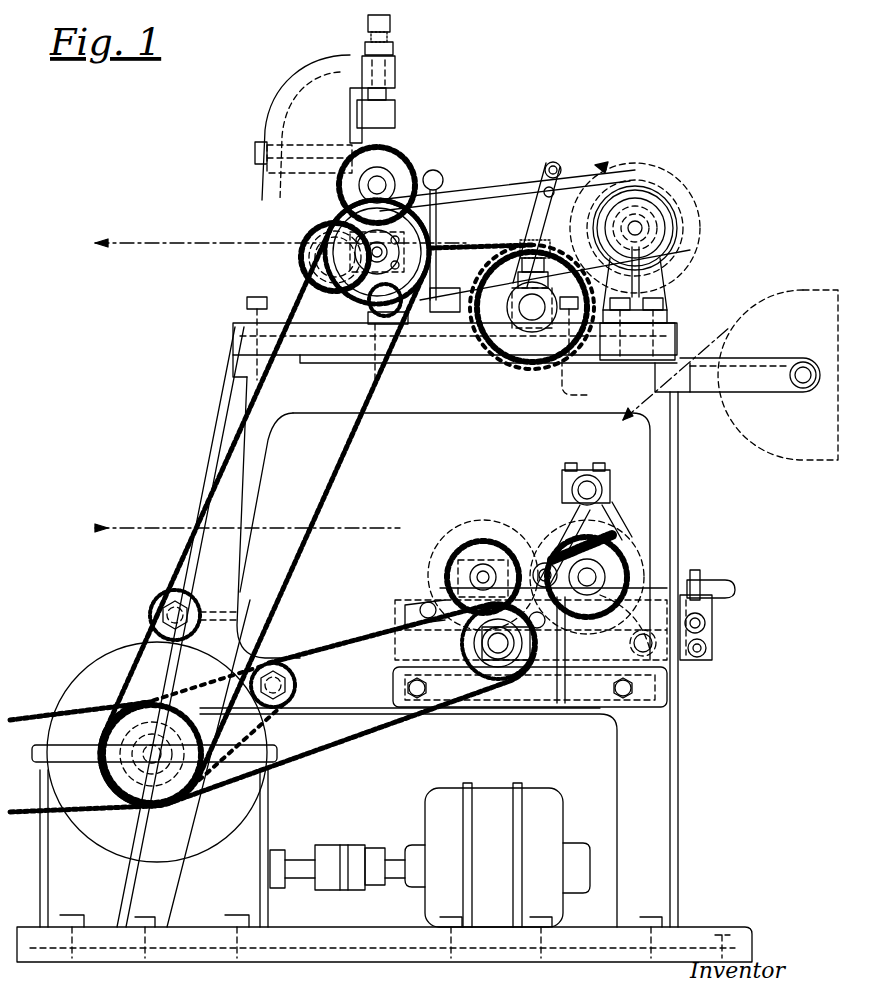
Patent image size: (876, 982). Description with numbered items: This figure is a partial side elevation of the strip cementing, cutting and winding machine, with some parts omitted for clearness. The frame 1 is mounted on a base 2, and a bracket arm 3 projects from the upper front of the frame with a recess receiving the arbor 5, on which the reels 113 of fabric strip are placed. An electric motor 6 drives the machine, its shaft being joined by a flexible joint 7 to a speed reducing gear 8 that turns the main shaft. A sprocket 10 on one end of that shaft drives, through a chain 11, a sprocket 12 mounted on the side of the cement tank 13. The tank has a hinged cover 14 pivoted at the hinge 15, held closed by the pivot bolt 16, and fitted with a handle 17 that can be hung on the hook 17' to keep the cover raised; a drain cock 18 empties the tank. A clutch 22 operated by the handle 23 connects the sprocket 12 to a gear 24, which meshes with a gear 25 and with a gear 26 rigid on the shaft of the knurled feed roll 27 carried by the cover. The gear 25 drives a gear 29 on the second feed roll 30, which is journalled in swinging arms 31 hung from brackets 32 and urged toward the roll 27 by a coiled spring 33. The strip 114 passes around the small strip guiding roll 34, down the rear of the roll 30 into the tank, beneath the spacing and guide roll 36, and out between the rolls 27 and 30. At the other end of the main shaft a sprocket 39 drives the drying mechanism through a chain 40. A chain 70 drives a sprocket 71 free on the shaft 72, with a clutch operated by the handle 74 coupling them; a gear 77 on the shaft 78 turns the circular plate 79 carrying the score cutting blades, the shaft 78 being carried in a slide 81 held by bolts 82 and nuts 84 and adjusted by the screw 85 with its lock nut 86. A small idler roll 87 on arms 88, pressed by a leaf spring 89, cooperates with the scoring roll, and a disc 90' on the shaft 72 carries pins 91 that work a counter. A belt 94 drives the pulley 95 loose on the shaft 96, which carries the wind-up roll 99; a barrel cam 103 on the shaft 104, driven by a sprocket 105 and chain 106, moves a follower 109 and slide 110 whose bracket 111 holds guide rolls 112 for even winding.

The frame 1 is at (670, 500).
The base 2 is at (705, 930).
The bracket arm 3 is at (715, 393).
The arbor 5 is at (805, 362).
The electric motor 6 is at (558, 812).
The flexible joint 7 is at (348, 848).
The speed reducing gear 8 is at (255, 790).
The sprocket 10 is at (205, 712).
The chain 11 is at (378, 732).
The sprocket 12 is at (490, 685).
The cement tank 13 is at (712, 630).
The cover 14 is at (658, 596).
The hinge 15 is at (420, 610).
The pivot bolt 16 is at (708, 616).
The handle 17 is at (715, 581).
The drain cock 18 is at (700, 657).
The clutch 22 is at (470, 643).
The handle 23 is at (560, 703).
The gear 24 is at (430, 688).
The gear 25 is at (612, 688).
The gear 26 is at (447, 577).
The feed roll 27 is at (455, 540).
The gear 29 is at (636, 562).
The feed roll 30 is at (612, 610).
The arm 31 is at (610, 512).
The bracket 32 is at (572, 512).
The coiled spring 33 is at (550, 555).
The strip guiding roll 34 is at (587, 468).
The spacing and guide roll 36 is at (648, 636).
The sprocket 39 is at (110, 772).
The chain 40 is at (37, 716).
The chain 70 is at (330, 468).
The sprocket 71 is at (365, 315).
The shaft 72 is at (377, 252).
The handle 74 is at (437, 180).
The gear 77 is at (400, 160).
The shaft 78 is at (368, 185).
The circular plate 79 is at (432, 172).
The slide 81 is at (395, 115).
The bolt 82 is at (300, 148).
The nut 84 is at (258, 152).
The screw 85 is at (380, 35).
The lock nut 86 is at (395, 50).
The idler roll 87 is at (318, 228).
The arm 88 is at (310, 258).
The leaf spring 89 is at (318, 272).
The disc 90' is at (359, 300).
The pin 91 is at (400, 238).
The belt 94 is at (455, 205).
The pulley 95 is at (655, 182).
The shaft 96 is at (640, 230).
The wind-up roll 99 is at (685, 225).
The barrel cam 103 is at (520, 335).
The shaft 104 is at (545, 320).
The sprocket 105 is at (500, 272).
The chain 106 is at (484, 247).
The follower 109 is at (555, 235).
The slide 110 is at (522, 256).
The bracket 111 is at (530, 200).
The guide roll 112 is at (565, 170).
The reel 113 is at (800, 290).
The strip 114 is at (196, 243).
The hook 17' is at (586, 384).